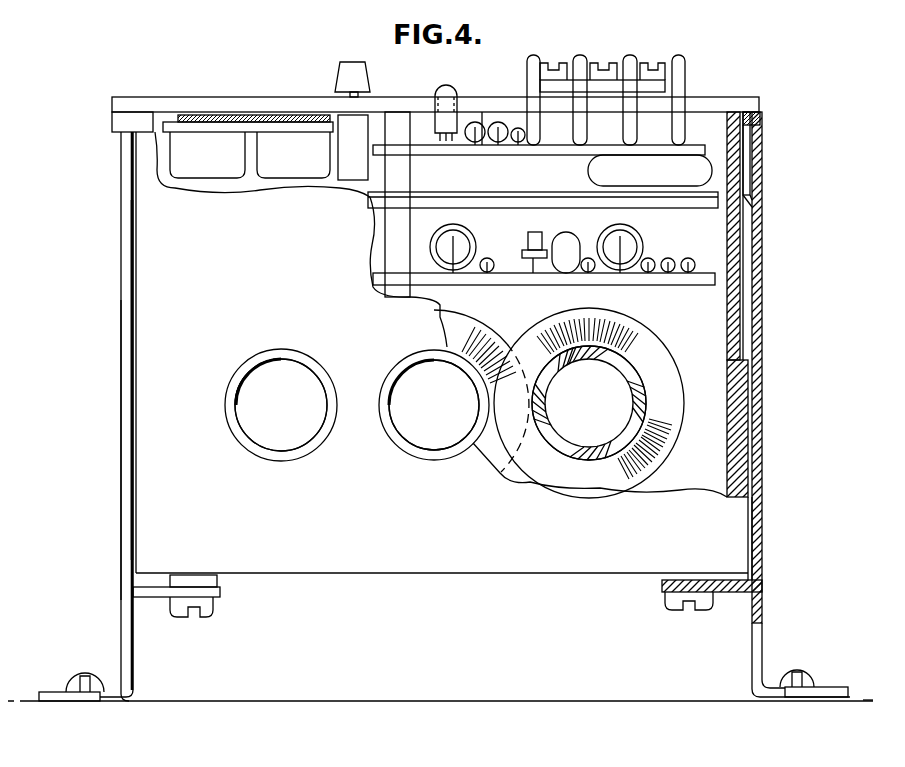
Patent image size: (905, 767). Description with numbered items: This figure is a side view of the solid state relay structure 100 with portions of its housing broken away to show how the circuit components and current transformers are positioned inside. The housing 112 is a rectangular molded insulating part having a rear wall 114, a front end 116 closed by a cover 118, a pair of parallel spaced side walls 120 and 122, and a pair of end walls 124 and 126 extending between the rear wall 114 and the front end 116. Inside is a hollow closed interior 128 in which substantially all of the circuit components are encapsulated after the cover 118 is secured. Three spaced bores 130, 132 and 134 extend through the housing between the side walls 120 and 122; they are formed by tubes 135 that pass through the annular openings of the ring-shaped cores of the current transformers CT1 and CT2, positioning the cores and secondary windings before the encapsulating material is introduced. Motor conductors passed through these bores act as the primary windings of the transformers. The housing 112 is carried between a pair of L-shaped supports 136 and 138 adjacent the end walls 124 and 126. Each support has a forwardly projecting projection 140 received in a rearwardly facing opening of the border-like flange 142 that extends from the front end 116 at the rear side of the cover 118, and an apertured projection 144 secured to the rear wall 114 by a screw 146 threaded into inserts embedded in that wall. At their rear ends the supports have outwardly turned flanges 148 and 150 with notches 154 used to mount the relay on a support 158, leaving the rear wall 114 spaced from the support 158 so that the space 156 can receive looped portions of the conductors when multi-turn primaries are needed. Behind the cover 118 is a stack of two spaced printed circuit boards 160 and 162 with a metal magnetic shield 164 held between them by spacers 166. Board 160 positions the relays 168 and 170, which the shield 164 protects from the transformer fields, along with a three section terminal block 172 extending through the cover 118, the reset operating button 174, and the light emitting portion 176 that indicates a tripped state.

The solid state relay structure 100 is at (751, 64).
The housing 112 is at (150, 282).
The rear wall 114 is at (425, 575).
The front end 116 is at (137, 110).
The cover 118 is at (250, 97).
The side wall 120 is at (286, 277).
The side wall 122 is at (718, 305).
The end wall 124 is at (134, 358).
The end wall 126 is at (750, 393).
The hollow closed interior 128 is at (548, 307).
The bore 130 is at (277, 352).
The bore 132 is at (425, 352).
The bore 134 is at (637, 372).
The tube 135 is at (402, 445).
The L-shaped support 136 is at (120, 428).
The L-shaped support 138 is at (762, 245).
The forwardly projecting projection 140 is at (745, 160).
The border-like flange 142 is at (760, 120).
The apertured projection 144 is at (145, 598).
The screw 146 is at (208, 612).
The outwardly turned flange 148 is at (55, 692).
The outwardly turned flange 150 is at (819, 687).
The notch 154 is at (95, 700).
The space 156 is at (548, 644).
The support 158 is at (352, 701).
The printed circuit board 160 is at (693, 152).
The printed circuit board 162 is at (640, 284).
The metal magnetic shield 164 is at (650, 200).
The spacer 166 is at (395, 143).
The relay 168 is at (213, 155).
The relay 170 is at (297, 155).
The three section terminal block 172 is at (678, 55).
The operating button 174 is at (340, 68).
The light emitting portion 176 is at (447, 87).
The current transformer CT1 is at (665, 444).
The current transformer CT2 is at (496, 334).